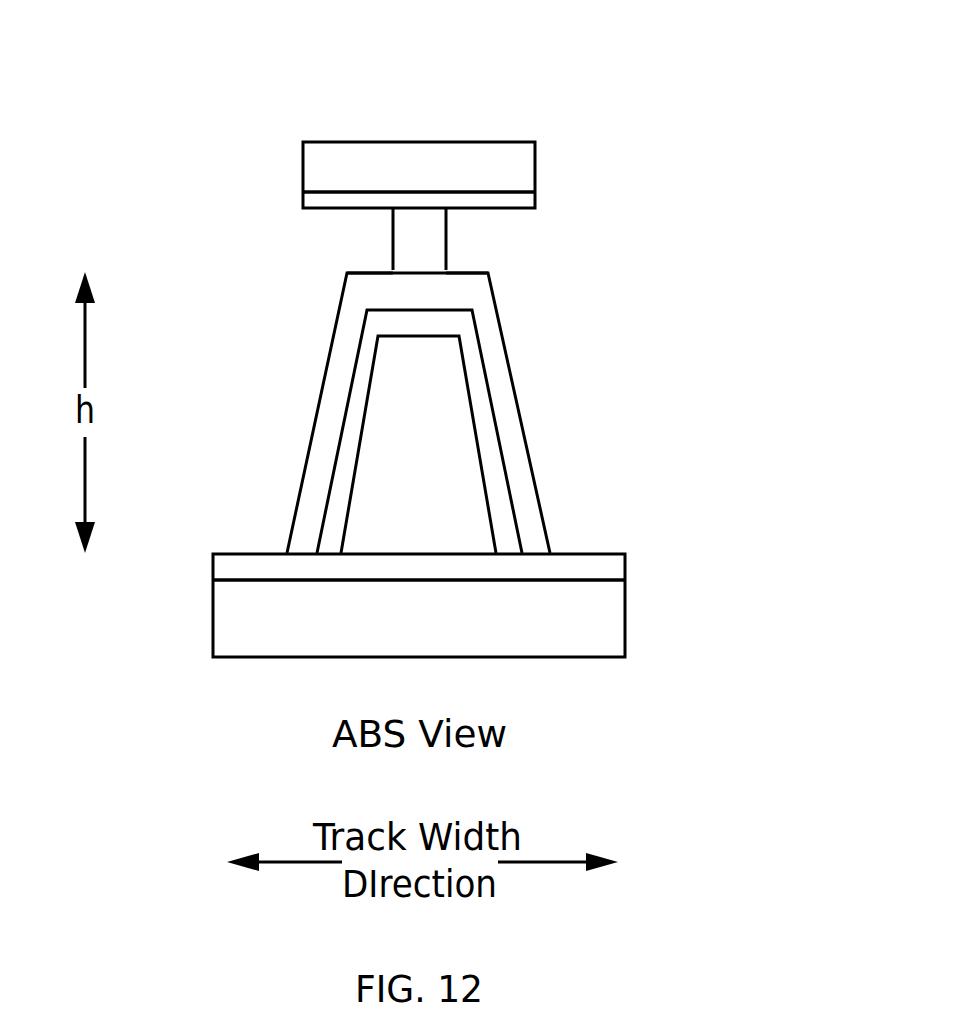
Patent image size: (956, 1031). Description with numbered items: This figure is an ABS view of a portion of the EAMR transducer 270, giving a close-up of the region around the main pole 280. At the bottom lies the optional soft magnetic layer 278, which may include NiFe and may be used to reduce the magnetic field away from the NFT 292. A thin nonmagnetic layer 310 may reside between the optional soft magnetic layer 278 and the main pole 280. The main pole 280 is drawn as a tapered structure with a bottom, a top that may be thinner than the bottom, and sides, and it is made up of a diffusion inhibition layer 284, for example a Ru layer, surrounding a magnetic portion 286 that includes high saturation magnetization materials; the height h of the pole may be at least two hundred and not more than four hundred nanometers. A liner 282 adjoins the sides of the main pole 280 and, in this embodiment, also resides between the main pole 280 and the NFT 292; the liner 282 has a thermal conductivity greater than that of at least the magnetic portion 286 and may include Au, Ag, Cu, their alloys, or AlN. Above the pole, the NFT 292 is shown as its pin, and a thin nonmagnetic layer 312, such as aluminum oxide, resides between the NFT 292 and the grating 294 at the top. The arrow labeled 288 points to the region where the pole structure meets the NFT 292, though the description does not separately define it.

The EAMR transducer 270 is at (453, 31).
The optional soft magnetic layer 278 is at (210, 630).
The main pole 280 is at (645, 400).
The liner 282 is at (528, 452).
The diffusion inhibition layer 284 is at (343, 452).
The magnetic portion 286 is at (470, 398).
The gap between pole and grating 288 is at (330, 243).
The NFT 292 is at (446, 246).
The grating 294 is at (367, 142).
The thin nonmagnetic layer 310 is at (627, 554).
The thin nonmagnetic layer 312 is at (302, 207).